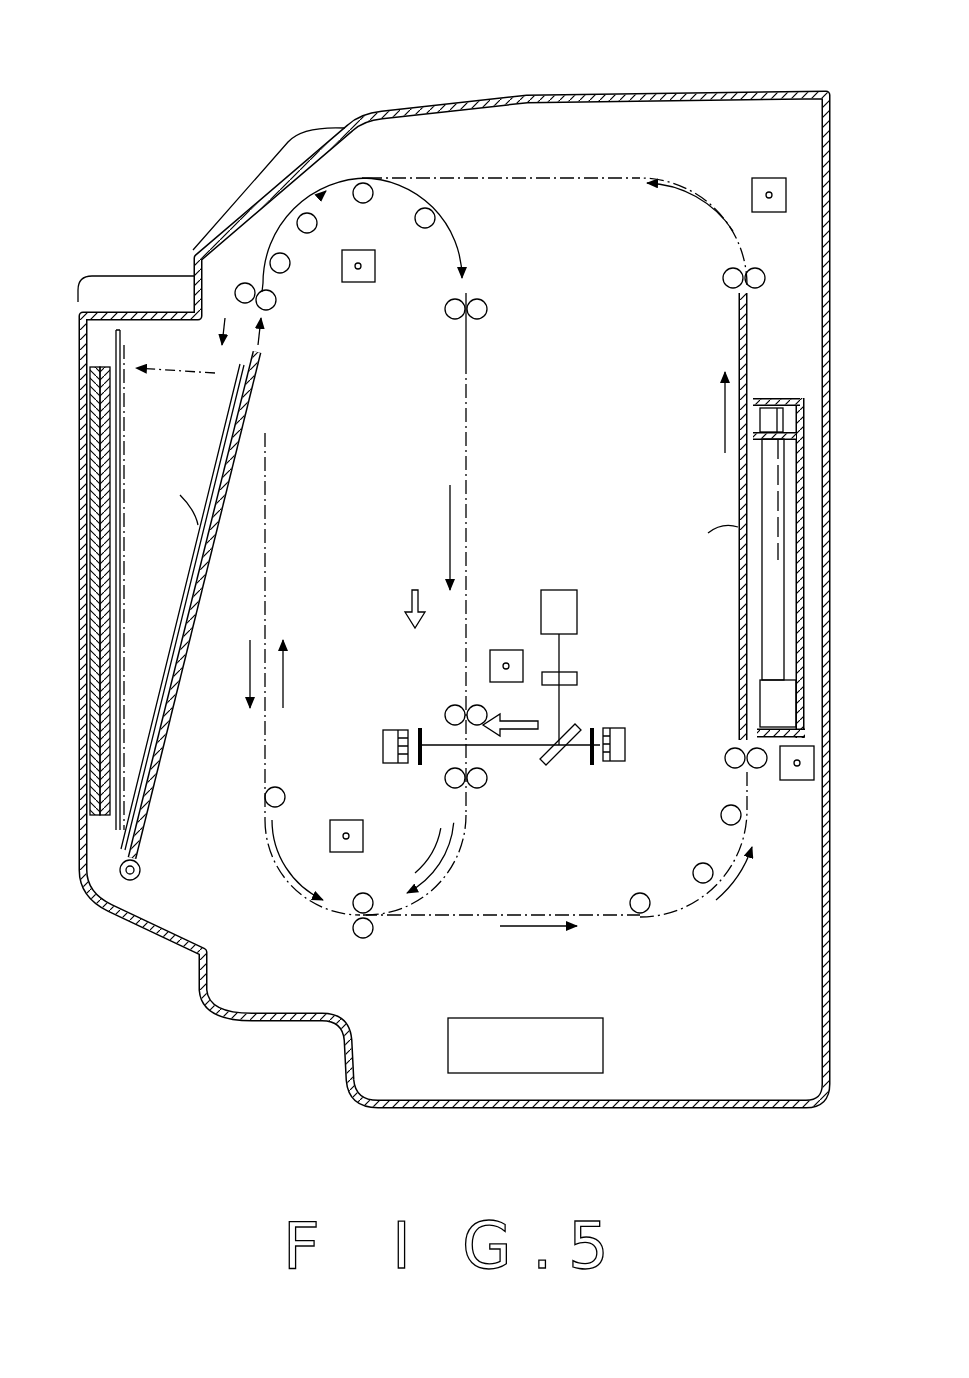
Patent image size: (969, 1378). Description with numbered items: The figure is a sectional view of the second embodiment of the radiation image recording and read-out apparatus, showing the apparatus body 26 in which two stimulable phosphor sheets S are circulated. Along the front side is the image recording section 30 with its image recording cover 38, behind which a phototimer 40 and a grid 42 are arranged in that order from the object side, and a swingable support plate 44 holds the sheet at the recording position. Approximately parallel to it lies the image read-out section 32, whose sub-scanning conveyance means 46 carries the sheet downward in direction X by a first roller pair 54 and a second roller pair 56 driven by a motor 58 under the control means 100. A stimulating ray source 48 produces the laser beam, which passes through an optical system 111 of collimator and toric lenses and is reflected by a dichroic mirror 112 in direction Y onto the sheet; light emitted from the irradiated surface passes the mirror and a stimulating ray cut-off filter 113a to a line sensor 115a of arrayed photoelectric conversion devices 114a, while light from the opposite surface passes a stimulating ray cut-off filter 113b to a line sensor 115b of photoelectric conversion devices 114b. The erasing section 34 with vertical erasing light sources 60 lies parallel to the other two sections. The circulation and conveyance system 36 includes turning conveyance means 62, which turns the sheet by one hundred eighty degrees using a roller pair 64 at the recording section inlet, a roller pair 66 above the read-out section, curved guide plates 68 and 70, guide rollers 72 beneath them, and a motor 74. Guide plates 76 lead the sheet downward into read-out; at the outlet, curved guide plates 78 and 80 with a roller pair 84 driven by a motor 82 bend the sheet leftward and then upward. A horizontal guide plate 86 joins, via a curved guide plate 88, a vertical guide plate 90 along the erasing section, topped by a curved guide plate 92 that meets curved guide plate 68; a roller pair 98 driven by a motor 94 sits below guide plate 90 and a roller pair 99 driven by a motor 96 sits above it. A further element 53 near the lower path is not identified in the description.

The apparatus body 26 is at (756, 32).
The image recording section 30 is at (108, 270).
The image read-out section 32 is at (551, 556).
The erasing section 34 is at (778, 382).
The circulation and conveyance system 36 is at (540, 150).
The image recording cover 38 is at (163, 312).
The phototimer 40 is at (93, 478).
The grid 42 is at (103, 532).
The support plate 44 is at (160, 770).
The sub-scanning conveyance means 46 is at (418, 683).
The stimulating ray source 48 is at (578, 614).
The roller 53 is at (680, 893).
The first roller pair 54 is at (455, 705).
The second roller pair 56 is at (452, 788).
The motor 58 is at (505, 650).
The erasing light source 60 is at (775, 540).
The turning conveyance means 62 is at (378, 160).
The roller pair 64 is at (277, 305).
The roller pair 66 is at (478, 298).
The curved guide plate 68 is at (327, 183).
The curved guide plate 70 is at (463, 250).
The guide roller 72 is at (318, 226).
The motor 74 is at (365, 282).
The guide plate 76 is at (462, 394).
The curved guide plate 78 is at (455, 880).
The curved guide plate 80 is at (350, 915).
The motor 82 is at (364, 842).
The roller pair 84 is at (372, 935).
The guide plate 86 is at (606, 916).
The curved guide plate 88 is at (707, 907).
The guide plate 90 is at (738, 305).
The curved guide plate 92 is at (682, 184).
The motor 94 is at (815, 758).
The motor 96 is at (770, 178).
The roller pair 98 is at (732, 765).
The roller pair 99 is at (725, 270).
The control means 100 is at (605, 1048).
The optical system 111 is at (578, 672).
The dichroic mirror 112 is at (555, 767).
The stimulating ray cut-off filter 113a is at (597, 767).
The stimulating ray cut-off filter 113b is at (420, 765).
The photoelectric conversion device 114a is at (612, 728).
The photoelectric conversion device 114b is at (407, 730).
The line sensor 115a is at (626, 745).
The line sensor 115b is at (382, 745).